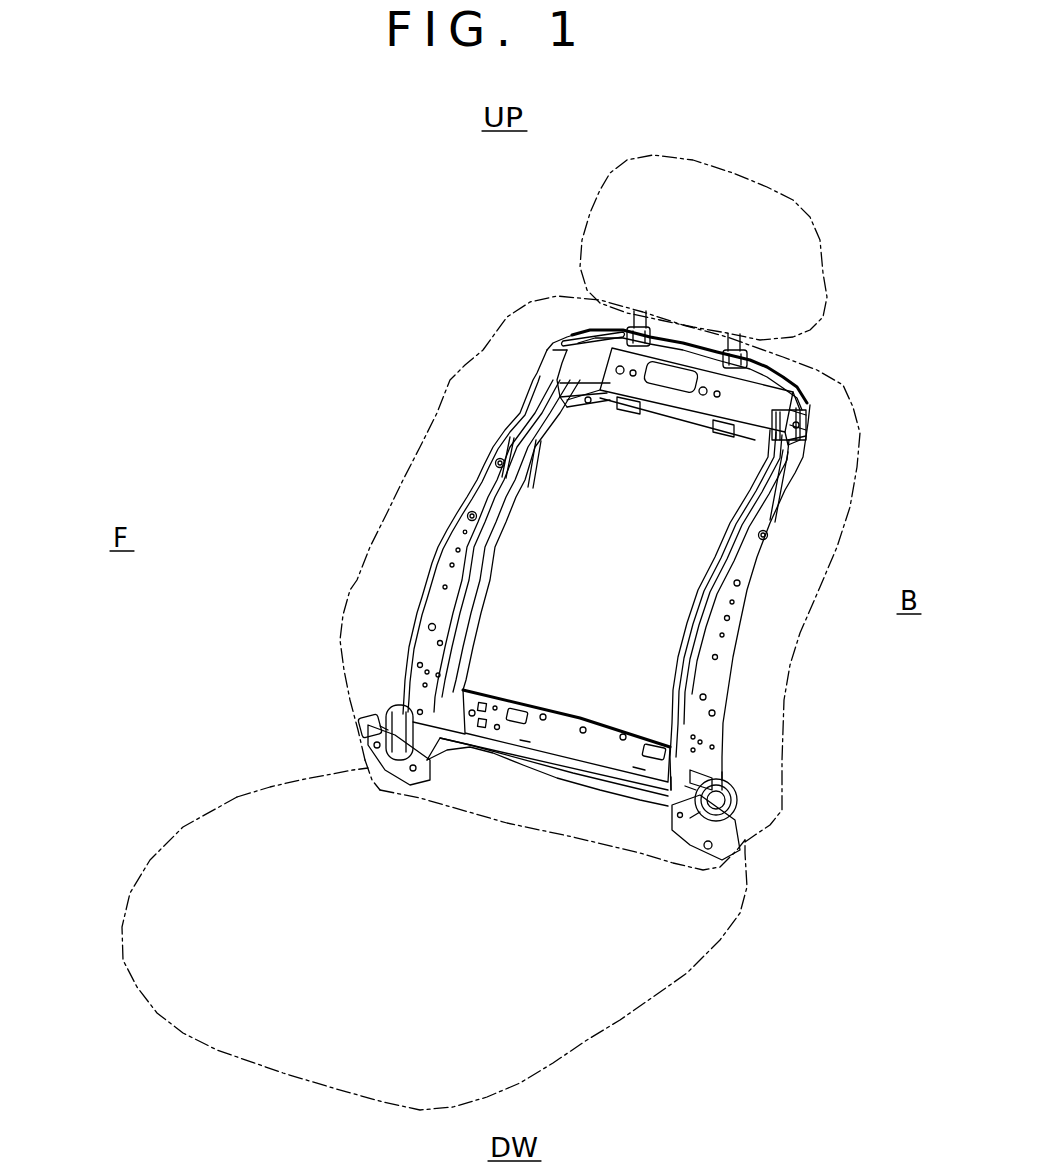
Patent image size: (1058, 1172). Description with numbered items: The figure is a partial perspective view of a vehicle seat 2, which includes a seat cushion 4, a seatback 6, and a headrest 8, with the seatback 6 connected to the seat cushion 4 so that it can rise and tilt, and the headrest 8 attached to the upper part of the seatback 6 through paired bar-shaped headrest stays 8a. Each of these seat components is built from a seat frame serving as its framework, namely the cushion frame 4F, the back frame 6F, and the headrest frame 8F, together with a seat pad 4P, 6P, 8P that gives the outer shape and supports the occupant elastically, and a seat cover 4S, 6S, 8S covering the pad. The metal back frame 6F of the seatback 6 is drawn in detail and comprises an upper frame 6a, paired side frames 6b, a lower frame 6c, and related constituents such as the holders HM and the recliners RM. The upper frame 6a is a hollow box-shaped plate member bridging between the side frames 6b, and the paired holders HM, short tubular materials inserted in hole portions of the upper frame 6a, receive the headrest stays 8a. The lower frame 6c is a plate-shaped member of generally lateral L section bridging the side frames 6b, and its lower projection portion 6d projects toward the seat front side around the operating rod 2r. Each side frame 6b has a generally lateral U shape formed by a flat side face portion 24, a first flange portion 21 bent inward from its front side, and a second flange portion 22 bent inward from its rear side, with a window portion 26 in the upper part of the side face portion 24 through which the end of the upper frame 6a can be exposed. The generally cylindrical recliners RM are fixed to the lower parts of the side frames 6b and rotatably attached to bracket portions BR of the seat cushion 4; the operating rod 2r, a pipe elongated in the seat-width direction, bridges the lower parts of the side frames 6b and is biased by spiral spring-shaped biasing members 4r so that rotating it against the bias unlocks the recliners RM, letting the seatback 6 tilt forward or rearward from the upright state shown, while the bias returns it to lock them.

The vehicle seat 2 is at (790, 148).
The seat cushion 4 is at (395, 919).
The cushion frame 4F is at (434, 939).
The seat pad 4P is at (434, 939).
The seat cover 4S is at (237, 795).
The biasing member 4r is at (737, 803).
The seatback 6 is at (276, 405).
The seat cover 6S is at (570, 569).
The seat pad 6P is at (423, 435).
The back frame 6F is at (467, 497).
The upper frame 6a is at (686, 417).
The side frame 6b is at (510, 548).
The lower frame 6c is at (555, 710).
The projection portion 6d is at (468, 747).
The headrest 8 is at (582, 247).
The seat frame 8F is at (703, 247).
The seat pad 8P is at (703, 247).
The seat cover 8S is at (585, 218).
The headrest stay 8a is at (637, 313).
The first flange portion 21 is at (547, 370).
The second flange portion 22 is at (813, 418).
The side face portion 24 is at (803, 457).
The window portion 26 is at (807, 447).
The operating rod 2r is at (557, 763).
The holder HM is at (623, 410).
The recliner RM is at (373, 708).
The bracket portion BR is at (383, 748).